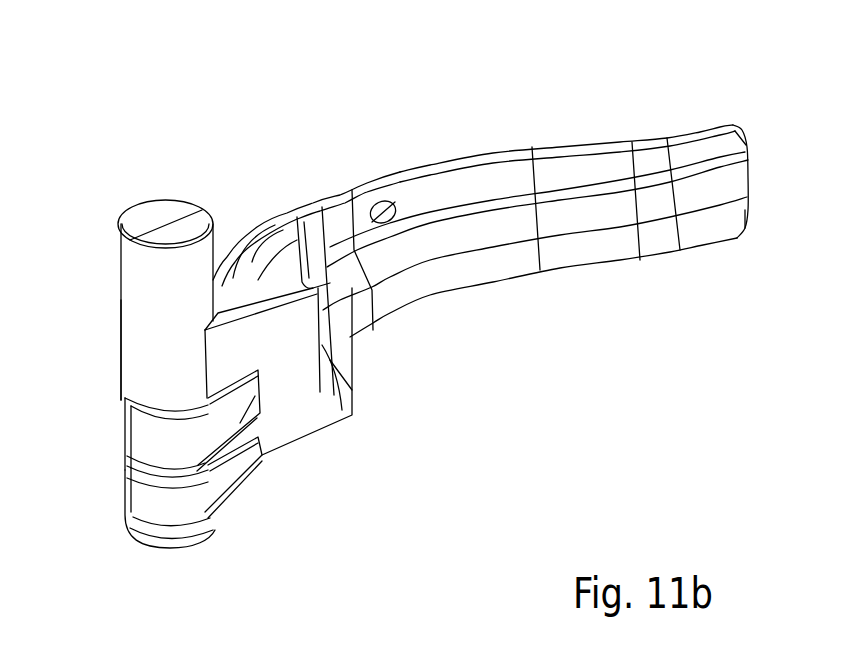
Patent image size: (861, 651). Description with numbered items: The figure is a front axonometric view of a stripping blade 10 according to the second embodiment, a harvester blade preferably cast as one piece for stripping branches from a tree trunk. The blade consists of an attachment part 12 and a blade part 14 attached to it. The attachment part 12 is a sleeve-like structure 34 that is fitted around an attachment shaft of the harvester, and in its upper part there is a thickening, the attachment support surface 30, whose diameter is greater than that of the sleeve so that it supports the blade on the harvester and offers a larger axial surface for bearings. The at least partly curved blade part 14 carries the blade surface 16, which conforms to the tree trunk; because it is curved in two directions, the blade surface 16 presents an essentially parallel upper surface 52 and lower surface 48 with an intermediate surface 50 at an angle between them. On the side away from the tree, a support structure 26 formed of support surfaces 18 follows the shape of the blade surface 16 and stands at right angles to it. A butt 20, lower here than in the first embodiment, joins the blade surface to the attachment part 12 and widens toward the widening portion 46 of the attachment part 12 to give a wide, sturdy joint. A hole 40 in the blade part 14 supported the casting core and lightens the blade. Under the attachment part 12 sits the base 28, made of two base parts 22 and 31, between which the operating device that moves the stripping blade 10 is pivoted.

The stripping blade 10 is at (412, 90).
The attachment part 12 is at (113, 268).
The blade part 14 is at (579, 148).
The blade surface 16 is at (500, 220).
The support surfaces 18 is at (262, 240).
The butt 20 is at (300, 403).
The base part 22 is at (158, 540).
The support structure 26 is at (246, 243).
The base 28 is at (124, 502).
The attachment support surface 30 is at (150, 222).
The base part 31 is at (143, 447).
The sleeve-like structure 34 is at (143, 348).
The hole 40 is at (370, 200).
The widening portion 46 is at (251, 266).
The lower surface 48 is at (687, 137).
The intermediate surface 50 is at (733, 182).
The upper surface 52 is at (733, 142).